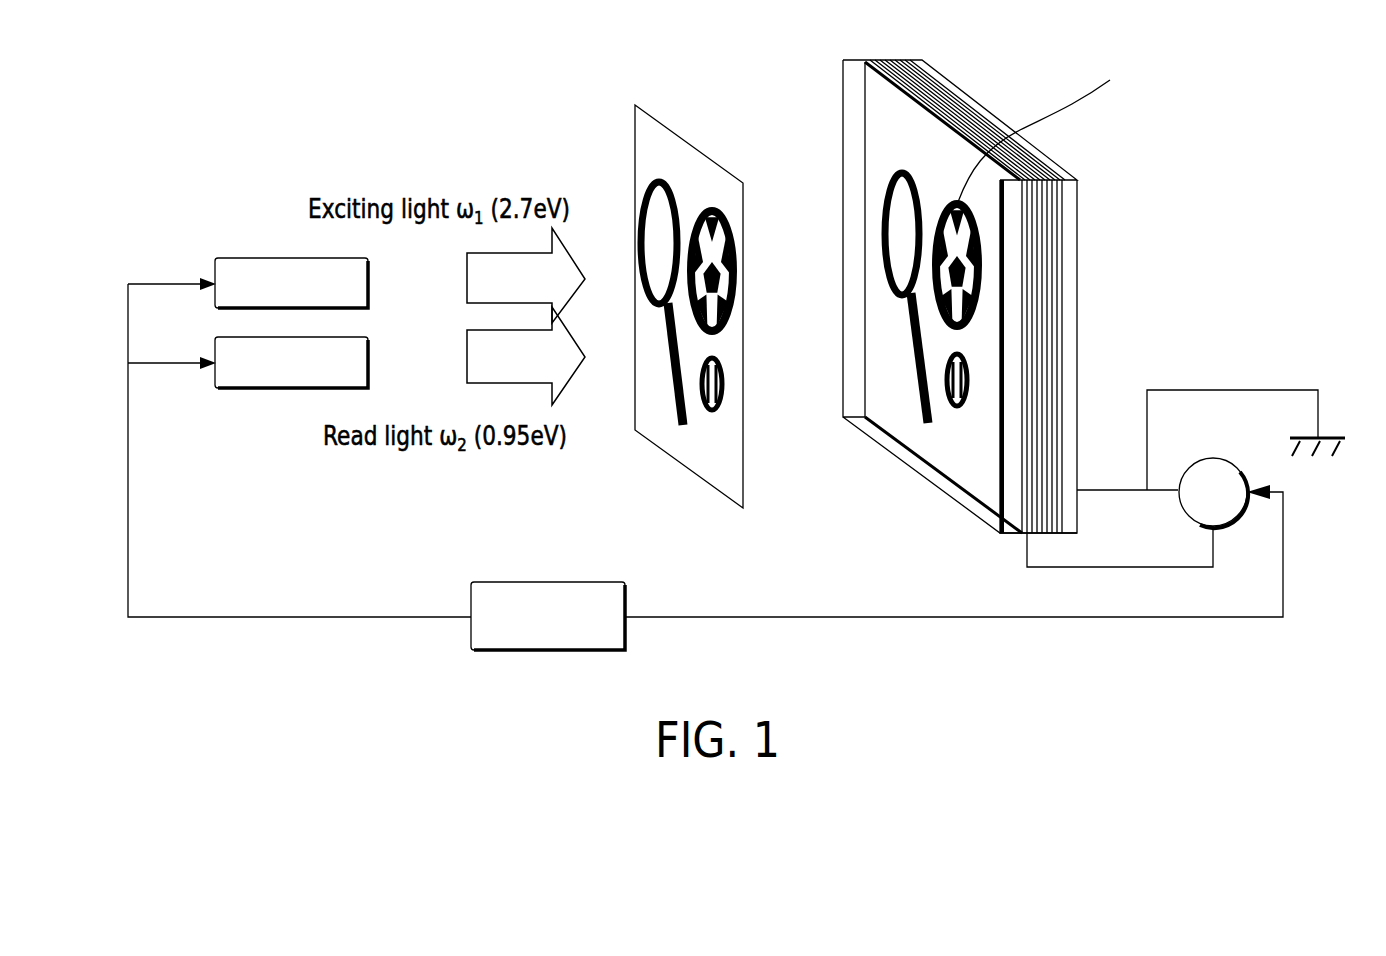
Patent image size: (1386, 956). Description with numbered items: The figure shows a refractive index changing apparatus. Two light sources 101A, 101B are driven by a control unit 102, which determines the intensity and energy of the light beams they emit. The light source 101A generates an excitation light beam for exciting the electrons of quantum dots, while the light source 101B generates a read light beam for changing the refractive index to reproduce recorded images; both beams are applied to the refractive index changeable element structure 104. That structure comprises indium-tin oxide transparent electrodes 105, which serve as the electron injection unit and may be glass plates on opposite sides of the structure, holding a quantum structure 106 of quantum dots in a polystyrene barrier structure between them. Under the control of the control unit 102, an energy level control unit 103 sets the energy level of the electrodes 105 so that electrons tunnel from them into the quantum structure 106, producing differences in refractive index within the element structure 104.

The light source 101A is at (226, 257).
The light source 101B is at (233, 390).
The control unit 102 is at (576, 582).
The energy level control unit 103 is at (1215, 459).
The refractive index changeable element structure 104 is at (1111, 278).
The transparent electrodes 105 is at (923, 477).
The quantum structure 106 is at (900, 50).